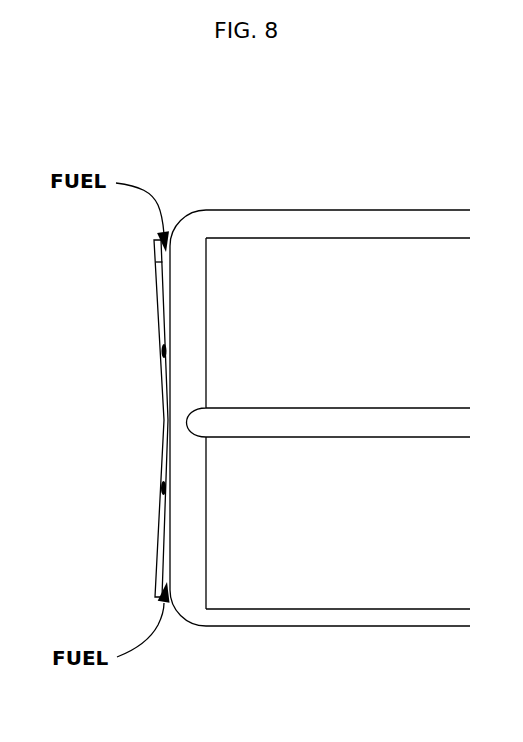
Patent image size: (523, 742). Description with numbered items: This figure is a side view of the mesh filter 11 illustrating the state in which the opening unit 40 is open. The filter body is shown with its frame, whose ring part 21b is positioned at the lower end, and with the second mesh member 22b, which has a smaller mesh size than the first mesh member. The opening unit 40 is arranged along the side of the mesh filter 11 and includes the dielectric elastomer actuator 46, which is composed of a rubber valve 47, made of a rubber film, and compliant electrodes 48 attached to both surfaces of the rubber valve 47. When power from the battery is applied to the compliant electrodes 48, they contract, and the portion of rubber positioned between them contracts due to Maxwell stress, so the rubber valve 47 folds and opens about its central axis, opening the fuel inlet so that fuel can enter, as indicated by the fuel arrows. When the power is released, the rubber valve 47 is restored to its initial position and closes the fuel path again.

The mesh filter 11 is at (338, 198).
The ring part 21b is at (189, 608).
The second mesh member 22b is at (323, 583).
The opening unit 40 is at (143, 527).
The dielectric elastomer actuator 46 is at (63, 275).
The rubber valve 47 is at (156, 281).
The compliant electrodes 48 is at (160, 351).